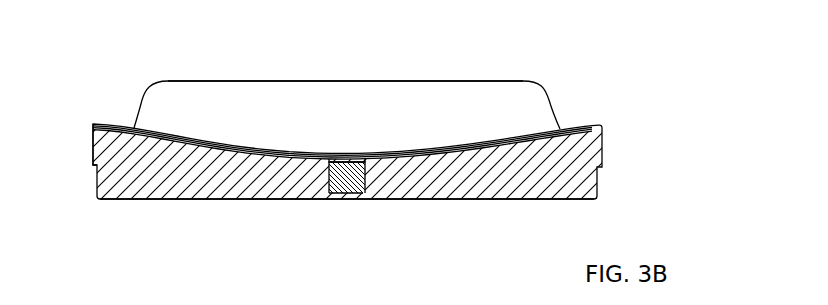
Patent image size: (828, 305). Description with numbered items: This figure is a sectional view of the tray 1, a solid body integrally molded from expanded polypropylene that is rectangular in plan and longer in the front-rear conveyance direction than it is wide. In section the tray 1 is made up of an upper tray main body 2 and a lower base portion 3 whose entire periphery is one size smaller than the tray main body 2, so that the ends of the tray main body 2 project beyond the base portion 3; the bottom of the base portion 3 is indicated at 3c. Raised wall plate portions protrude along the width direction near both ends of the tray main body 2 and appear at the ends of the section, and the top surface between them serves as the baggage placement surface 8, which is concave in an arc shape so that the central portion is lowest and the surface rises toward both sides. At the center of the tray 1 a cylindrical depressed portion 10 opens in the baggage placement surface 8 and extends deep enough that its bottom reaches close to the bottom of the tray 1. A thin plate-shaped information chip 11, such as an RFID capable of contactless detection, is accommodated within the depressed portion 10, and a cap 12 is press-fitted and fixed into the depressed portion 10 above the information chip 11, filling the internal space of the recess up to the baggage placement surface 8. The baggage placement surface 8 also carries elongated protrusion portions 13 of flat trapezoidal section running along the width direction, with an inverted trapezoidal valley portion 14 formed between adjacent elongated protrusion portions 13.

The tray 1 is at (520, 70).
The tray main body 2 is at (85, 148).
The base portion 3 is at (611, 182).
The bottom surface of base member 3c is at (250, 200).
The baggage placement surface 8 is at (218, 149).
The depressed portion 10 is at (350, 170).
The information chip 11 is at (348, 194).
The cap 12 is at (348, 173).
The elongated protrusion portion 13 is at (272, 151).
The valley portion 14 is at (440, 153).